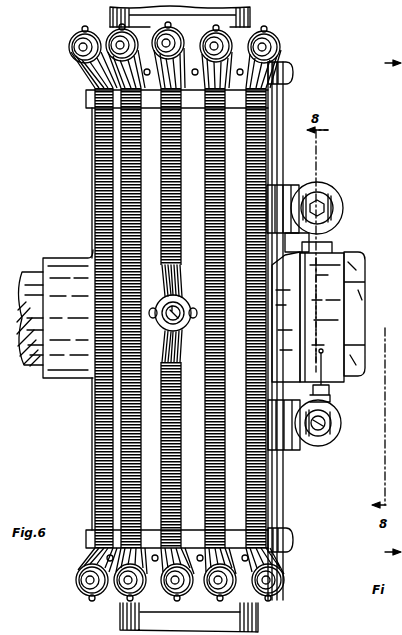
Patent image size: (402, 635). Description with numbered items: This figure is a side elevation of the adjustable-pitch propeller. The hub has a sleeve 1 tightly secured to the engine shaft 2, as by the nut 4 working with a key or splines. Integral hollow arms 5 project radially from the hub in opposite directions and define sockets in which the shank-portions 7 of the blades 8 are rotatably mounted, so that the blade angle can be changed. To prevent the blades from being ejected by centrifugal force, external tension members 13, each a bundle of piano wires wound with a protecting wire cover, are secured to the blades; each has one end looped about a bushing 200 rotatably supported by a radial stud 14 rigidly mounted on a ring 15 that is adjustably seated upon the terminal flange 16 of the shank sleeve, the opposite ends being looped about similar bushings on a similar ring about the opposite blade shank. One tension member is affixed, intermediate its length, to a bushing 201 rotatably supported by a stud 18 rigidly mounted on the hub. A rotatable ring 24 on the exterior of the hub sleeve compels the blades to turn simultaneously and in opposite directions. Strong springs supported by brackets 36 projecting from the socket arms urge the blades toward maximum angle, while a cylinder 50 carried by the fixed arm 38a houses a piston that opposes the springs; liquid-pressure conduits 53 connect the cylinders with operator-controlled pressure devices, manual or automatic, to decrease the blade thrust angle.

The sleeve 1 is at (66, 262).
The shaft 2 is at (27, 280).
The nut 4 is at (353, 257).
The hollow arms 5 is at (280, 148).
The shank-portions 7 is at (384, 310).
The blades 8 is at (250, 15).
The external tension members 13 is at (107, 127).
The radial stud 14 is at (70, 46).
The ring 15 is at (283, 40).
The terminal flange 16 is at (292, 71).
The stud 18 is at (176, 331).
The rotatable ring 24 is at (334, 253).
The brackets 36 is at (285, 193).
The fixed arm 38a is at (317, 433).
The cylinder 50 is at (323, 186).
The liquid-pressure conduits 53 is at (328, 346).
The bushing 200 is at (112, 26).
The bushing 201 is at (153, 303).